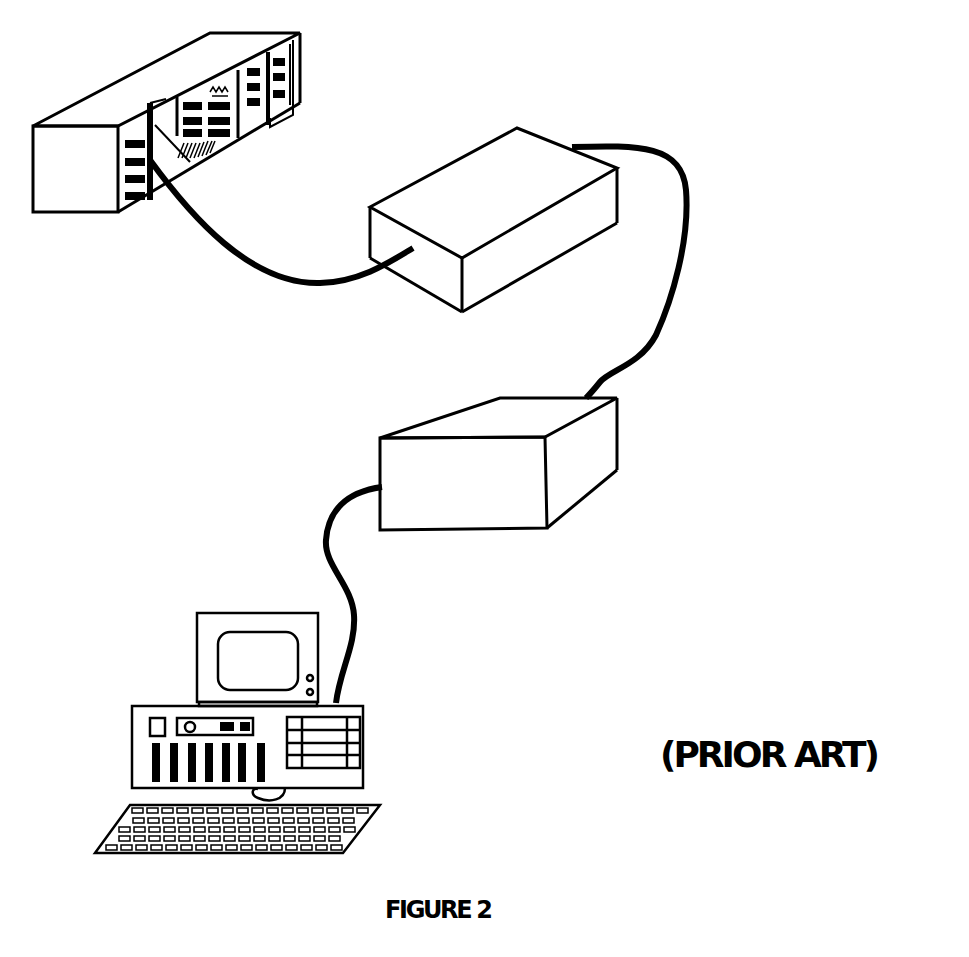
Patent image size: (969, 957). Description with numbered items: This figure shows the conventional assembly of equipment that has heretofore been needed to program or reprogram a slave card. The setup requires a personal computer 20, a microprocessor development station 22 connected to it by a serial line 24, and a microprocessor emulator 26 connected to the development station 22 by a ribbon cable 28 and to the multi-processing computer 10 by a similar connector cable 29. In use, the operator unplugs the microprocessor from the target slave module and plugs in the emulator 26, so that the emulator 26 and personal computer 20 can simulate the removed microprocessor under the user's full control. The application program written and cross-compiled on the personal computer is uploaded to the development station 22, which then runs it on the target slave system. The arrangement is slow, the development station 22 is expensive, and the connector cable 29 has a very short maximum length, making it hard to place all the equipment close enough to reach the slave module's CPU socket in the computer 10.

The multi-processing computer 10 is at (100, 73).
The personal computer 20 is at (365, 710).
The microprocessor development station 22 is at (495, 547).
The RS 232 serial line 24 is at (300, 538).
The microprocessor emulator 26 is at (500, 116).
The ribbon cable 28 is at (625, 337).
The connector cable 29 is at (288, 256).